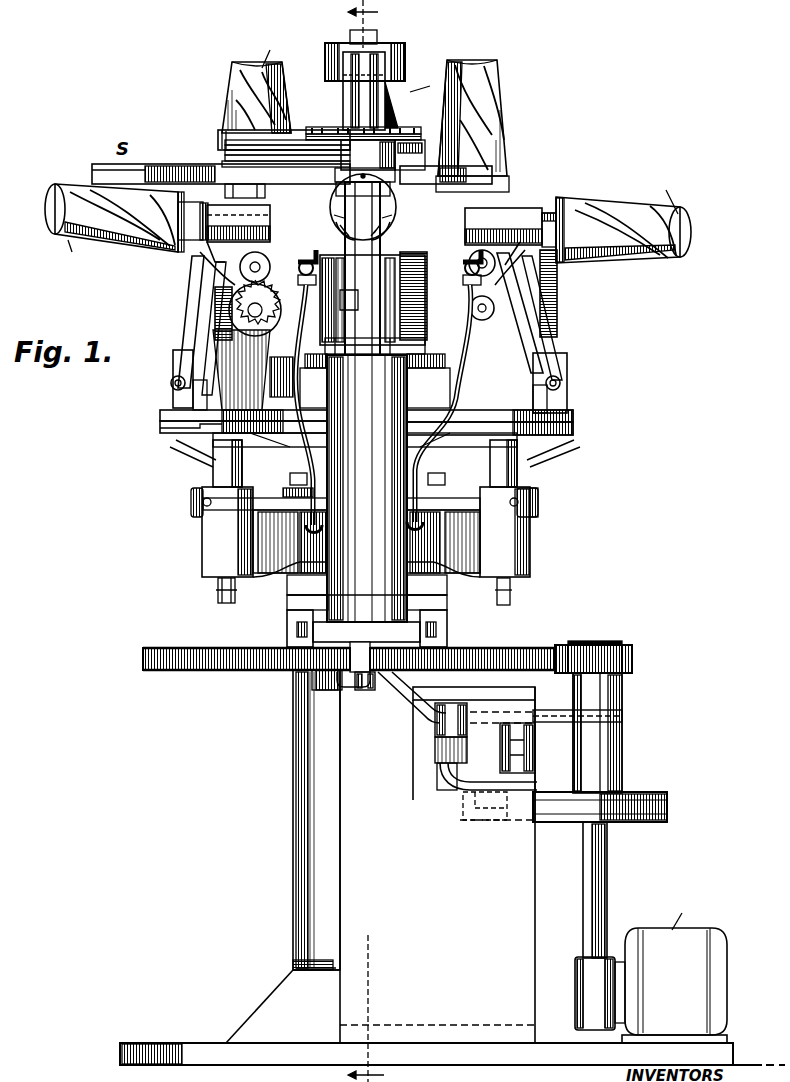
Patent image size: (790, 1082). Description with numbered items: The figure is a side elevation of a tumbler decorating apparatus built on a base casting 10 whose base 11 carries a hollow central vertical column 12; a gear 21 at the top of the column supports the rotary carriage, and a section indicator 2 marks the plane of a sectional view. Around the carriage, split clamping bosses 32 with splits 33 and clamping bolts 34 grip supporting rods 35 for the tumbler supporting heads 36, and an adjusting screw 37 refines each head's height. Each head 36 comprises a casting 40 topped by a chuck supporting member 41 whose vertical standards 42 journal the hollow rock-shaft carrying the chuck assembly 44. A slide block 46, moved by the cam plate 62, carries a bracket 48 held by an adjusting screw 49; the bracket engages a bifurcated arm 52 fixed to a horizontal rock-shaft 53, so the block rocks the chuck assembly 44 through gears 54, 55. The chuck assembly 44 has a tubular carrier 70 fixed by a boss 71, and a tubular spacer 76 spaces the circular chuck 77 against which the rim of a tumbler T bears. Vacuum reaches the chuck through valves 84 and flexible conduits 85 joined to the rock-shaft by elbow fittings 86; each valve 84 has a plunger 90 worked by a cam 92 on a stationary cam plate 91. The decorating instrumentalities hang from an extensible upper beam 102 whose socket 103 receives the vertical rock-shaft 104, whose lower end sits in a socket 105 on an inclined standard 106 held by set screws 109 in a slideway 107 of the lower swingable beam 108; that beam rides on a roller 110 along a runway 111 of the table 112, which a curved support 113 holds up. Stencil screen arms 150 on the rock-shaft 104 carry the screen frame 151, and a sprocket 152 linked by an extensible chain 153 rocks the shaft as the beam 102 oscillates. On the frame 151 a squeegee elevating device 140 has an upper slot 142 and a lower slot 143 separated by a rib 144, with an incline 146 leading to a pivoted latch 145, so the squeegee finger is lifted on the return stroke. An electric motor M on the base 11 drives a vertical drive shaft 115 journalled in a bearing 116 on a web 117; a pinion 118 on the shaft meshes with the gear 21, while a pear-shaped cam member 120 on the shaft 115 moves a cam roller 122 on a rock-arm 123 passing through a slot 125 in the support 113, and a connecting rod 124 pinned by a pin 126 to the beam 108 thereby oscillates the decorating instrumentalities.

The section line 2 is at (367, 541).
The extensible horizontal upper beam 102 is at (396, 50).
The socket 103 is at (386, 64).
The sprocket 152 is at (420, 108).
The extensible chain 153 is at (420, 123).
The stencil screen arms 150 is at (333, 172).
The squeegee elevating device 140 is at (250, 134).
The lower slot 143 is at (296, 158).
The rib 144 is at (299, 155).
The upper slot 142 is at (301, 150).
The pivoted latch 145 is at (226, 150).
The incline 146 is at (222, 158).
The screen frame 151 is at (418, 176).
The tubular carrier 70 is at (470, 267).
The circular chuck 77 is at (640, 210).
The tubular spacer 76 is at (185, 264).
The tumbler supporting chuck assembly 44 is at (200, 270).
The vertical rock-shaft 104 is at (362, 216).
The socket 105 is at (395, 332).
The gear 55 is at (242, 274).
The gear 54 is at (420, 304).
The horizontal rock-shaft 53 is at (470, 312).
The boss 71 is at (558, 276).
The elbow fittings 86 is at (468, 258).
The flexible conduits 85 is at (297, 439).
The vertical standards 42 is at (330, 305).
The swingable bifurcated arm 52 is at (534, 327).
The cam plate 62 is at (283, 372).
The bracket 48 is at (560, 374).
The adjusting screw 49 is at (562, 386).
The reciprocable slide block 46 is at (560, 404).
The chuck supporting member 41 is at (562, 417).
The casting 40 is at (562, 430).
The tumbler supporting head 36 is at (540, 454).
The supporting rod 35 is at (517, 472).
The clamping bolt 34 is at (540, 492).
The split 33 is at (538, 504).
The clamping bosses 32 is at (540, 530).
The adjusting screw 37 is at (512, 594).
The plunger 90 is at (446, 482).
The cam 92 is at (290, 480).
The valves 84 is at (284, 494).
The stationary cam plate 91 is at (445, 477).
The inclined standard 106 is at (405, 596).
The set screws 109 is at (448, 644).
The slideway 107 is at (300, 647).
The lower horizontally swingable beam 108 is at (348, 658).
The gear 21 is at (157, 670).
The pinion 118 is at (650, 634).
The hollow central vertical column 12 is at (304, 768).
The roller 110 is at (350, 682).
The curved support 113 is at (353, 824).
The base casting 10 is at (300, 896).
The base 11 is at (196, 1042).
The runway 111 is at (508, 662).
The table 112 is at (535, 656).
The pin 126 is at (368, 688).
The connecting rod 124 is at (412, 718).
The rock-arm 123 is at (452, 780).
The slot 125 is at (440, 794).
The cam roller 122 is at (470, 808).
The bearing 116 is at (612, 752).
The web 117 is at (622, 720).
The pear-shaped cam member 120 is at (662, 782).
The vertical drive shaft 115 is at (636, 876).
The electric motor M is at (674, 968).
The tumblers T is at (368, 149).